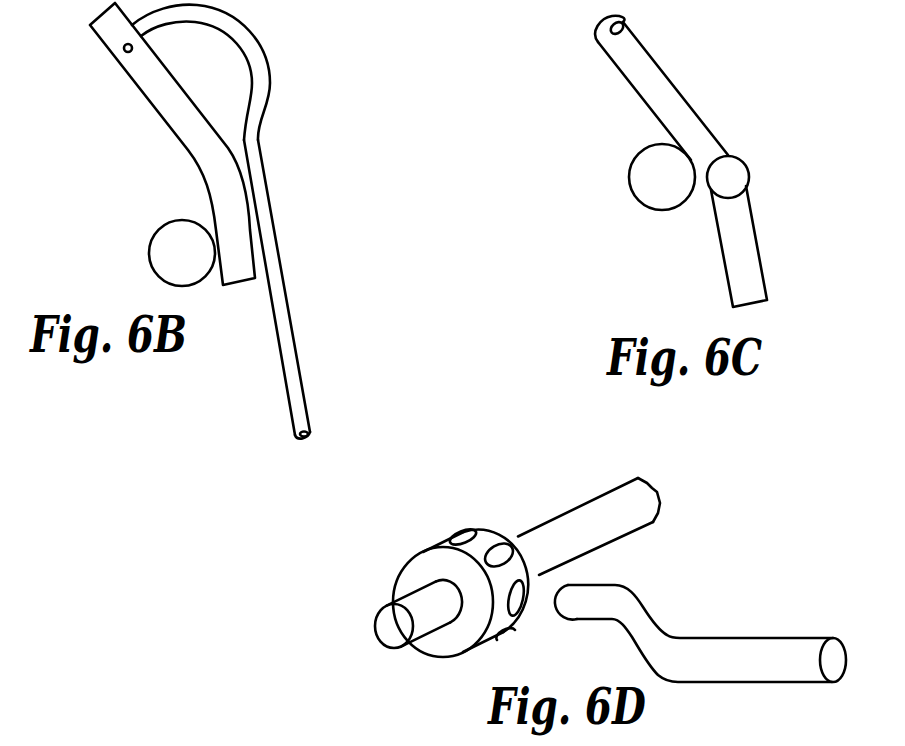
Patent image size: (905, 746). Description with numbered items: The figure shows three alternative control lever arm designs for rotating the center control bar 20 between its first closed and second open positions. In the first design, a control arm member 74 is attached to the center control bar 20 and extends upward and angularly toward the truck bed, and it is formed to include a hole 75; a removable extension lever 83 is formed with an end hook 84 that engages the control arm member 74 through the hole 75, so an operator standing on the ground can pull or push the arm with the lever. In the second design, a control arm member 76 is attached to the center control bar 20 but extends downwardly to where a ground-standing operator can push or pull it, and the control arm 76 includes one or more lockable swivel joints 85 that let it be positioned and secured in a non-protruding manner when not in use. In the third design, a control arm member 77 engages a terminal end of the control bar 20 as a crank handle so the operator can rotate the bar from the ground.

In FIG. 6B, the center control bar 20 is at (150, 252).
In FIG. 6C, the center control bar 20 is at (628, 180).
In FIG. 6D, the center control bar 20 is at (542, 537).
In FIG. 6B, the control arm member 74 is at (222, 213).
In FIG. 6B, the hole 75 is at (124, 52).
In FIG. 6C, the control arm member 76 is at (730, 252).
In FIG. 6D, the control arm member 77 is at (750, 643).
In FIG. 6B, the removable extension lever 83 is at (296, 384).
In FIG. 6B, the end hook 84 is at (152, 27).
In FIG. 6C, the lockable swivel joint 85 is at (738, 167).